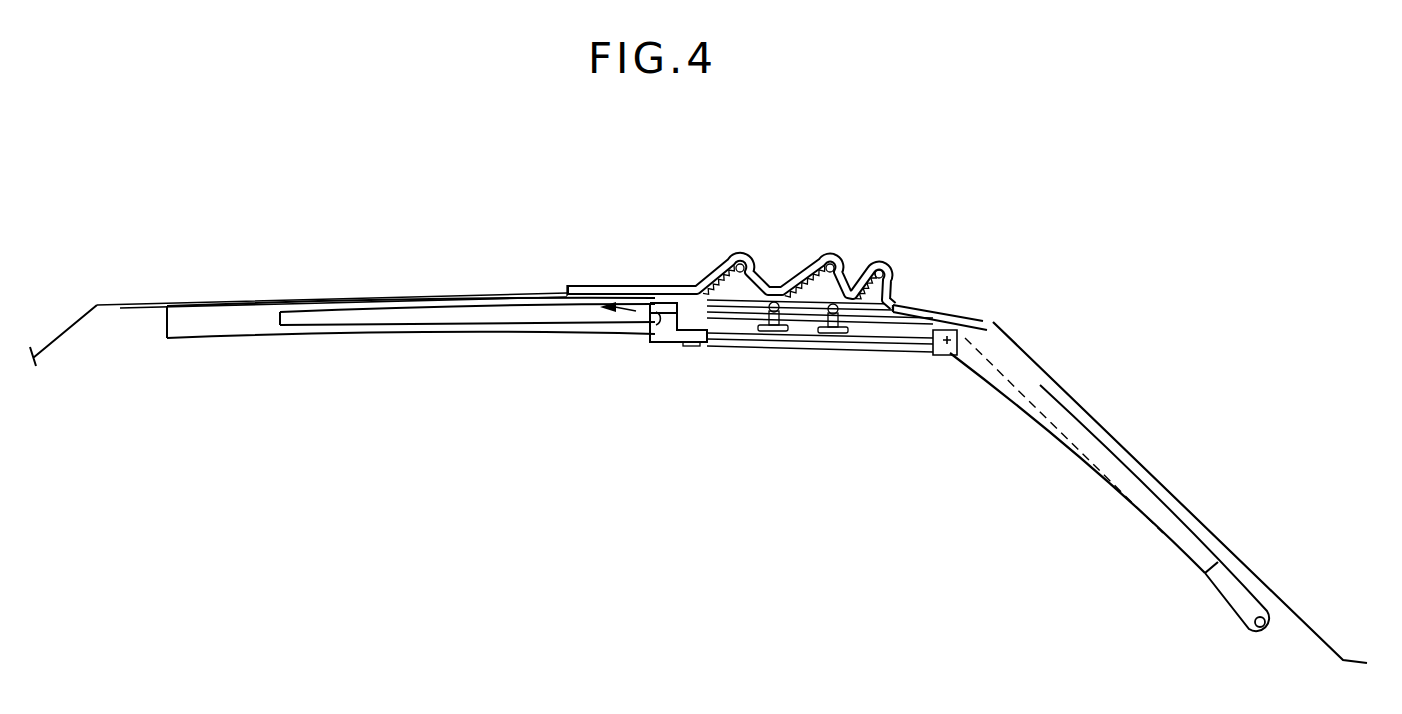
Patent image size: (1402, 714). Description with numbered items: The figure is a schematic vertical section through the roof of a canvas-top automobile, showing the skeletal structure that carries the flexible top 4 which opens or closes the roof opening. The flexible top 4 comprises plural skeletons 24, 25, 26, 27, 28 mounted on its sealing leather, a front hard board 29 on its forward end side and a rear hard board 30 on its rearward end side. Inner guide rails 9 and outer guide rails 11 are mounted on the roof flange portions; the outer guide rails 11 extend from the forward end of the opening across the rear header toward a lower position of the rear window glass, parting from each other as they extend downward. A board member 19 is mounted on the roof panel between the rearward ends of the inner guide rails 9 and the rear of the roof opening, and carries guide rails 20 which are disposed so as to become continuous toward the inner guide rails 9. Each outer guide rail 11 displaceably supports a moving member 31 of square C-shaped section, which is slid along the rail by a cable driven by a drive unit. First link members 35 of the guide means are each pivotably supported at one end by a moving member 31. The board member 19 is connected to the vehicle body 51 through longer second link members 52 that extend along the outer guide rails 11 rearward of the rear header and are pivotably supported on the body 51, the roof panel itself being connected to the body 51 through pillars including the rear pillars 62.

The flexible top 4 is at (883, 252).
The guide rails 9 is at (382, 315).
The guide rails 11 is at (193, 322).
The board member 19 is at (693, 347).
The guide rails 20 is at (896, 336).
The skeleton 24 is at (737, 258).
The skeleton 25 is at (775, 332).
The skeleton 26 is at (828, 258).
The skeleton 27 is at (833, 334).
The skeleton 28 is at (889, 276).
The front hard board 29 is at (590, 286).
The rear hard board 30 is at (937, 307).
The moving member 31 is at (658, 345).
The link members 35 is at (640, 317).
The vehicle body 51 is at (1043, 372).
The link members 52 is at (1247, 583).
The rear pillars 62 is at (1285, 626).